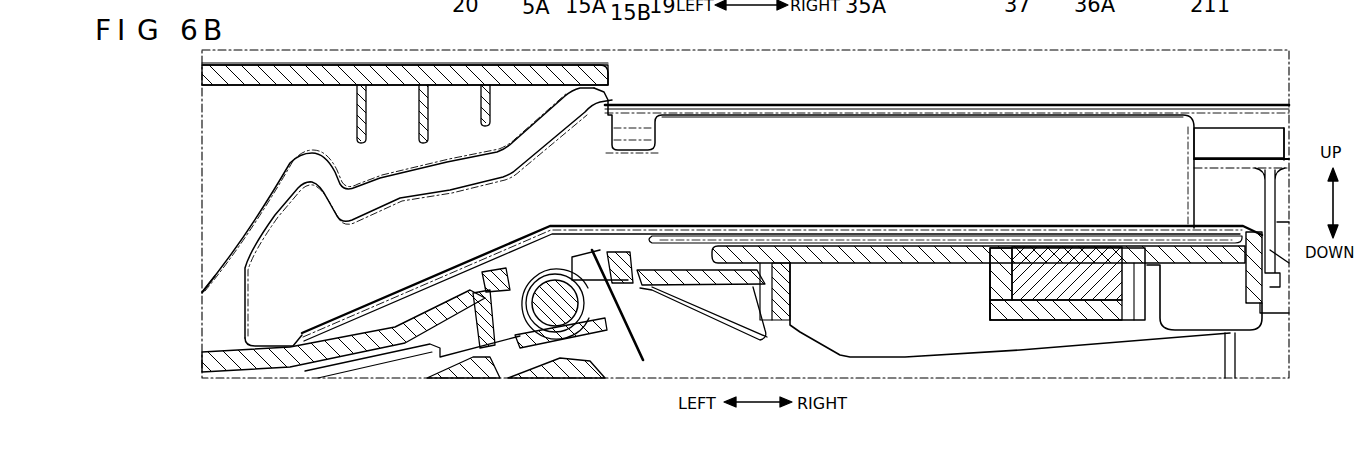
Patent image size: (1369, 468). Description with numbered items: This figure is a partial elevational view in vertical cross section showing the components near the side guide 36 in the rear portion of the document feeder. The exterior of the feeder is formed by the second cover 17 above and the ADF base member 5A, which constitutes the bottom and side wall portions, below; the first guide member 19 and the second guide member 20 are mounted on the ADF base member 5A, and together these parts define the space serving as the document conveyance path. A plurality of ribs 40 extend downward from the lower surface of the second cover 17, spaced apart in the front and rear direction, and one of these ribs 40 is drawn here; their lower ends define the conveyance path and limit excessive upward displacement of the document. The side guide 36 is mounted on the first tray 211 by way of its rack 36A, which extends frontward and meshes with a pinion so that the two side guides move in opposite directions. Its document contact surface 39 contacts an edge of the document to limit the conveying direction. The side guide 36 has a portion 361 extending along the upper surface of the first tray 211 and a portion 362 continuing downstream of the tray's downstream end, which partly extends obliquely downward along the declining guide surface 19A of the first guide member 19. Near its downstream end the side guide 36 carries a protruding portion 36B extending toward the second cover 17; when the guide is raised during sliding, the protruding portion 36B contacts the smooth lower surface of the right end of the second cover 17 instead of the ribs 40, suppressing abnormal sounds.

The second cover 17 is at (386, 78).
The portion of side guide 362 is at (439, 208).
The protruding portion 36B is at (602, 112).
The document contact surface 39 is at (757, 170).
The portion of side guide 361 is at (900, 118).
The side guide 36 is at (1162, 150).
The rib 40 is at (240, 253).
The declining guide surface 19A is at (258, 367).
The first guide member 19 is at (690, 297).
The second guide member 20 is at (475, 360).
The ADF base member 5A is at (541, 360).
The first tray 211 is at (905, 255).
The rack 36A is at (1095, 285).